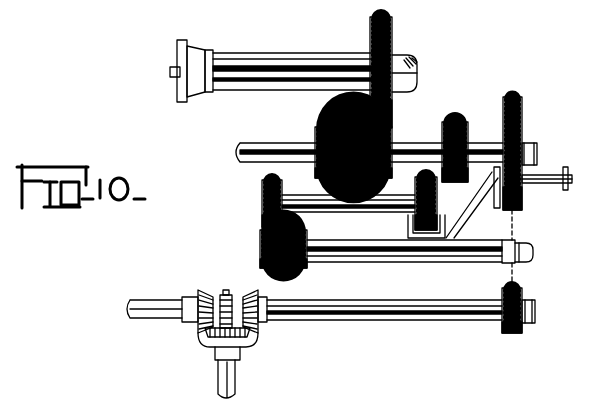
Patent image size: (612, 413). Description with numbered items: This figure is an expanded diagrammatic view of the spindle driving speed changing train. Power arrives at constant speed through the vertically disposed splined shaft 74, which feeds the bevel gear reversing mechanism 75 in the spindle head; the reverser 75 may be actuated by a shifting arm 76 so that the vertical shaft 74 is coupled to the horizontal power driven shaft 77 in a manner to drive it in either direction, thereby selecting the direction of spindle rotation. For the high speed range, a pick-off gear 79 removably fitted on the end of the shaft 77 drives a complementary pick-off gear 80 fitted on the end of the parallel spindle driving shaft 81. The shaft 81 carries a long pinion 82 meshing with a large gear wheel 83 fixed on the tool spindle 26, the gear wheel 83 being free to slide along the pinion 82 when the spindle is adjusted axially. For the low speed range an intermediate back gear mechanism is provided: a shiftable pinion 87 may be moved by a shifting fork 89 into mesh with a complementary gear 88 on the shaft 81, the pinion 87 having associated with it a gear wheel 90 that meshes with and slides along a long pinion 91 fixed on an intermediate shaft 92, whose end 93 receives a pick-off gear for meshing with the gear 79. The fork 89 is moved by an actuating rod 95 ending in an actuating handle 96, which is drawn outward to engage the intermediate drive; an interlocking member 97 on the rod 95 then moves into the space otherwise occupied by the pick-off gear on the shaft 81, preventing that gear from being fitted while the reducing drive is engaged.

The tool spindle 26 is at (244, 60).
The large gear wheel 83 is at (392, 32).
The long pinion 82 is at (332, 128).
The spindle driving shaft 81 is at (410, 147).
The complementary gear 88 is at (450, 122).
The pick-off gear 80 is at (522, 122).
The actuating rod 95 is at (524, 181).
The actuating handle 96 is at (568, 186).
The interlocking member 97 is at (473, 202).
The gear wheel 90 is at (262, 215).
The shiftable pinion 87 is at (390, 206).
The shifting fork 89 is at (413, 234).
The long pinion 91 is at (262, 256).
The intermediate shaft 92 is at (376, 257).
The end of intermediate shaft 93 is at (508, 263).
The pick-off gear 79 is at (522, 286).
The horizontal power driven shaft 77 is at (402, 316).
The bevel gear reversing mechanism 75 is at (200, 343).
The shifting arm 76 is at (227, 293).
The splined shaft 74 is at (236, 382).